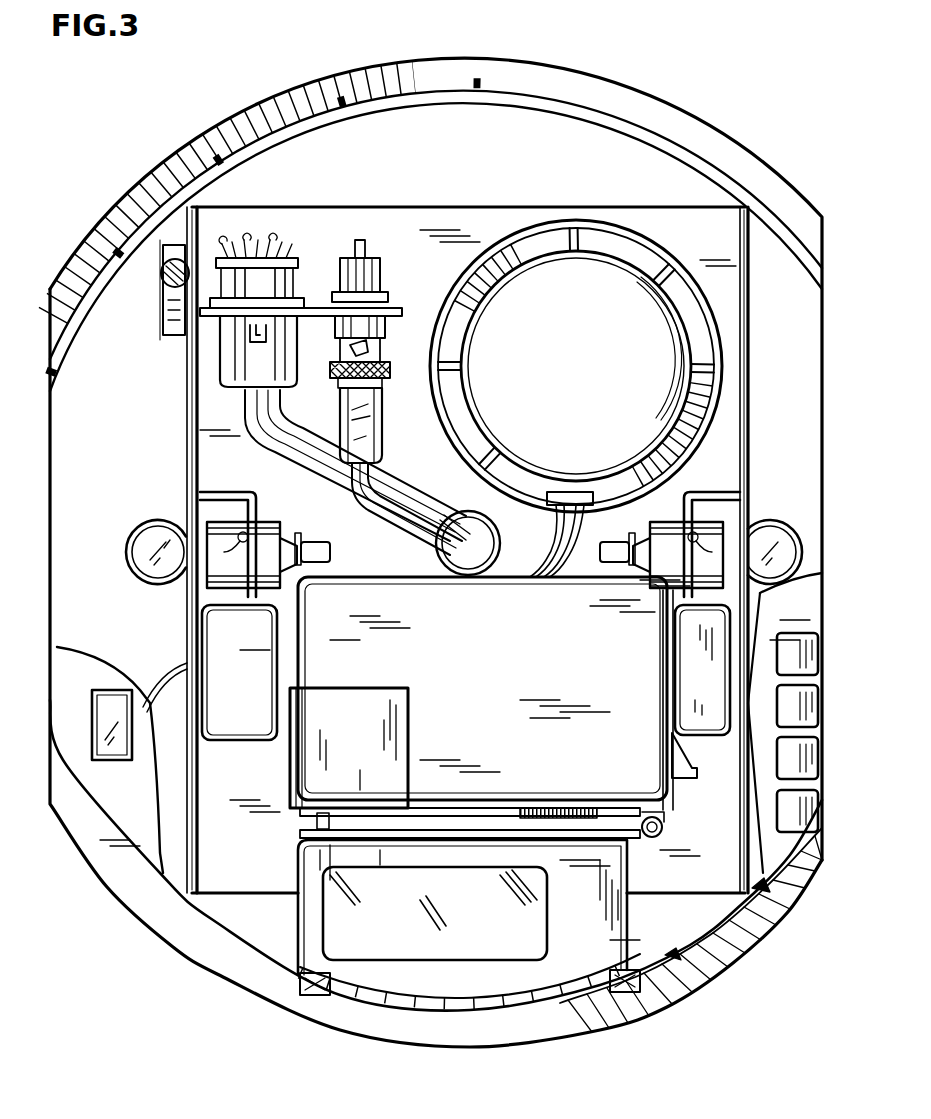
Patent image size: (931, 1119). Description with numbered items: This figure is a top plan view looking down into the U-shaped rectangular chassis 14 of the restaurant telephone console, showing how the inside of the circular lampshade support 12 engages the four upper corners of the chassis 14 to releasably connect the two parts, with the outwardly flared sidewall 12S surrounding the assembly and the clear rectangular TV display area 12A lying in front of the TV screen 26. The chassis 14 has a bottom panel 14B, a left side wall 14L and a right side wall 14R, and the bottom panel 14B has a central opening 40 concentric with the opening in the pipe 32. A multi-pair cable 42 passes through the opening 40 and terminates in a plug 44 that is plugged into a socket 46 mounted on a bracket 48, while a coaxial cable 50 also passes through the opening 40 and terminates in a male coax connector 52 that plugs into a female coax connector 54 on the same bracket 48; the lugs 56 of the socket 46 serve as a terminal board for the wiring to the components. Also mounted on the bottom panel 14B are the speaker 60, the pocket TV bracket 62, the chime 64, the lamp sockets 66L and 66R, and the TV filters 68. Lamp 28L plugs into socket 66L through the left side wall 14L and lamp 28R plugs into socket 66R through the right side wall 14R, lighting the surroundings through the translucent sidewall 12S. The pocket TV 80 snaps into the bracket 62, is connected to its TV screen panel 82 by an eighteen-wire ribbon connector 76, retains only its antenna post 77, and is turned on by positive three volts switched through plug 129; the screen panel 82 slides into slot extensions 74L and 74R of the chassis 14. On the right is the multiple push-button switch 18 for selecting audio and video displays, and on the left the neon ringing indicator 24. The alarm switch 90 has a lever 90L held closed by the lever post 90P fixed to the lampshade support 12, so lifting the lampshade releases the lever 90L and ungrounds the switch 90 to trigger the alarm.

The circular lampshade support 12 is at (545, 78).
The outwardly flared sidewall 12S is at (744, 950).
The rectangular TV display area 12A is at (504, 1000).
The U-shaped rectangular chassis 14 is at (560, 212).
The bottom panel 14B is at (428, 213).
The left side wall 14L is at (186, 392).
The right side wall 14R is at (750, 426).
The push-button switch 18 is at (780, 735).
The neon ringing indicator 24 is at (108, 703).
The TV screen 26 is at (545, 906).
The left lamp 28L is at (145, 528).
The right lamp 28R is at (779, 594).
The pipe 32 is at (460, 514).
The central opening 40 is at (495, 530).
The multi-pair cable 42 is at (283, 464).
The plug 44 is at (285, 392).
The socket 46 is at (300, 280).
The bracket 48 is at (400, 309).
The coaxial cable 50 is at (372, 476).
The male coax connector 52 is at (380, 416).
The female coax connector 54 is at (383, 276).
The lugs 56 is at (288, 246).
The speaker 60 is at (560, 384).
The pocket TV bracket 62 is at (290, 745).
The chime 64 is at (240, 677).
The left lamp socket 66L is at (262, 522).
The right lamp socket 66R is at (718, 522).
The TV filters 68 is at (717, 687).
The left slot extension 74L is at (335, 987).
The right slot extension 74R is at (640, 988).
The 18-wire ribbon connector 76 is at (570, 808).
The antenna post 77 is at (664, 827).
The pocket TV 80 is at (495, 663).
The TV screen panel 82 is at (618, 870).
The alarm switch 90 is at (160, 298).
The lever 90L is at (172, 338).
The lever post 90P is at (192, 263).
The plug 129 is at (670, 778).